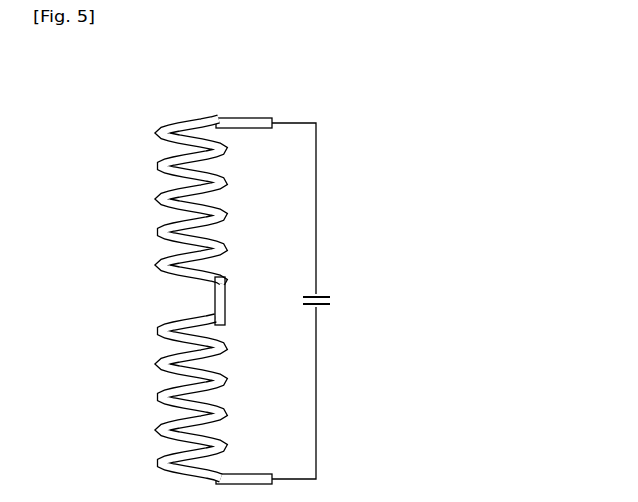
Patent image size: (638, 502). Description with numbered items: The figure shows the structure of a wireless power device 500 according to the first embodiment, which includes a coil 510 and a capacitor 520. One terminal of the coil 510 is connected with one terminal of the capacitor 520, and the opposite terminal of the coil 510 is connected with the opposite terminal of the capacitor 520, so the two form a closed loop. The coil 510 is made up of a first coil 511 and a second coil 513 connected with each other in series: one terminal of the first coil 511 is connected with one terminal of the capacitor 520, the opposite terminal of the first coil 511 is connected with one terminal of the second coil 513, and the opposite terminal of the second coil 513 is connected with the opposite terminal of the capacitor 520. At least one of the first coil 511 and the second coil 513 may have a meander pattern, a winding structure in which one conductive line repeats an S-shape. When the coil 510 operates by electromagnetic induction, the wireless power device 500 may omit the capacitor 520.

The wireless power device 500 is at (86, 101).
The coil 510 is at (98, 232).
The first coil 511 is at (158, 235).
The second coil 513 is at (158, 336).
The capacitor 520 is at (331, 291).